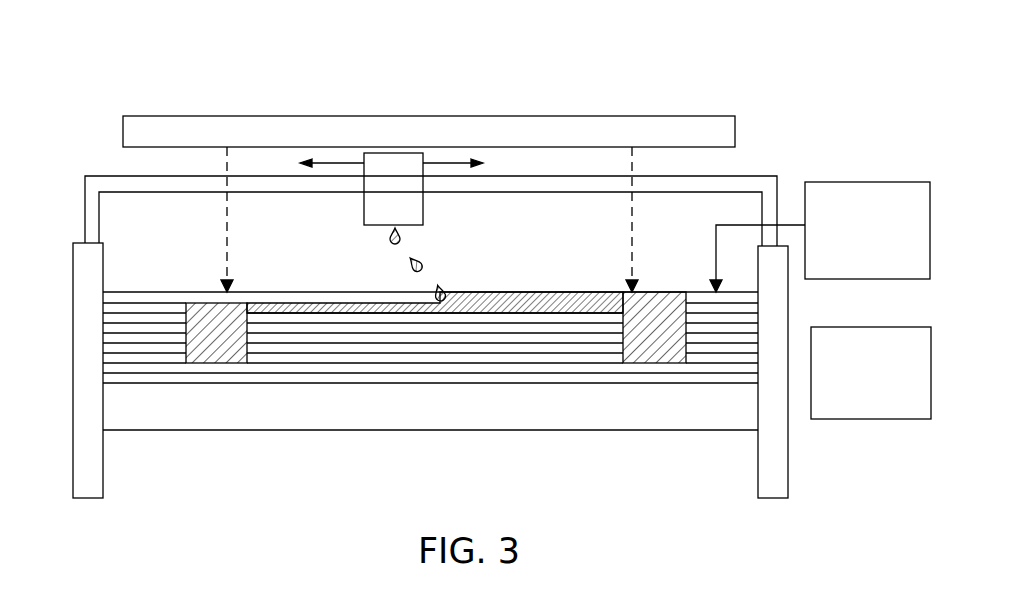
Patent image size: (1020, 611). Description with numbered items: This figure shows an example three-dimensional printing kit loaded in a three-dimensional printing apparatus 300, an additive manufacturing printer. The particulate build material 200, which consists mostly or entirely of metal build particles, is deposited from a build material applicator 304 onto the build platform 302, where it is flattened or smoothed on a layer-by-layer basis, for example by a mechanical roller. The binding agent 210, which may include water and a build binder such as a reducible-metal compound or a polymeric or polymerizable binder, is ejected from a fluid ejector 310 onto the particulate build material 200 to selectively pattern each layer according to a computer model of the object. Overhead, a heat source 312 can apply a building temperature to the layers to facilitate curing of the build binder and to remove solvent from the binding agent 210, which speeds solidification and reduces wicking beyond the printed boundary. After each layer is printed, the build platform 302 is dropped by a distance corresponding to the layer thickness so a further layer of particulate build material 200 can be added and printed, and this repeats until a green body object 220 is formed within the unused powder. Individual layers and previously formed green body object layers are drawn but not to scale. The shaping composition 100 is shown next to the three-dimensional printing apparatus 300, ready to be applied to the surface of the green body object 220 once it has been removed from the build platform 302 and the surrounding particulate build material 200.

The 3D printing apparatus 300 is at (196, 66).
The heat source 312 is at (448, 142).
The fluid ejector 310 is at (415, 201).
The build platform 302 is at (452, 416).
The build material applicator 304 is at (888, 246).
The shaping composition 100 is at (893, 386).
The particulate build material 200 is at (348, 367).
The green body object 220 is at (515, 292).
The binding agent 210 is at (422, 262).